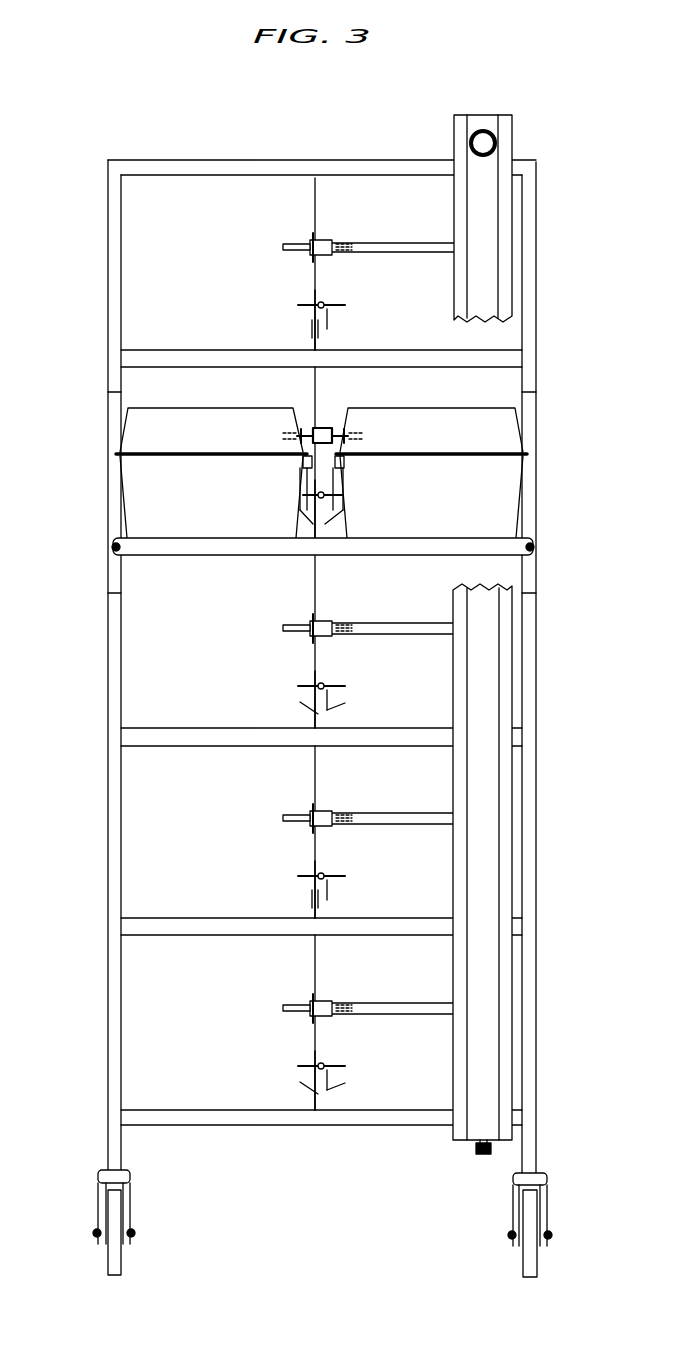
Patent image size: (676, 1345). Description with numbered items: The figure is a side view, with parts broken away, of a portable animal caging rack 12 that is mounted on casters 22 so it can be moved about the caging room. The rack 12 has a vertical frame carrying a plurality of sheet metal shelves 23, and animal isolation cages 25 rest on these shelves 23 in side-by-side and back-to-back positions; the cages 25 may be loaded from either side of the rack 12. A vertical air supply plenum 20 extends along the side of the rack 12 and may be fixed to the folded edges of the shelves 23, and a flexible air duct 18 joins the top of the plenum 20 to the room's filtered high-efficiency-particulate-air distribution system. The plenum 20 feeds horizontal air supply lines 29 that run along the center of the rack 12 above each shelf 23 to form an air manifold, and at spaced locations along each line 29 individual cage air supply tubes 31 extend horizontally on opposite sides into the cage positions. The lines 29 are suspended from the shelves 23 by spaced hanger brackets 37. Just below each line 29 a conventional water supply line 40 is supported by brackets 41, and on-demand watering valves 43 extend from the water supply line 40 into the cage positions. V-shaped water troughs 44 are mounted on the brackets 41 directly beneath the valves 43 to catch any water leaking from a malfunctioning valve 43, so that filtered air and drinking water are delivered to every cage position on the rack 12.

The animal caging rack 12 is at (109, 632).
The flexible air duct 18 is at (483, 131).
The vertical air supply plenum 20 is at (454, 130).
The caster 22 is at (130, 1218).
The sheet metal shelf 23 is at (200, 357).
The animal isolation cage 25 is at (128, 483).
The horizontal air supply line 29 is at (417, 245).
The individual cage air supply tube 31 is at (290, 247).
The hanger bracket 37 is at (312, 192).
The water supply line 40 is at (322, 683).
The bracket 41 is at (300, 702).
The on-demand watering valve 43 is at (337, 303).
The V-shaped water trough 44 is at (312, 328).